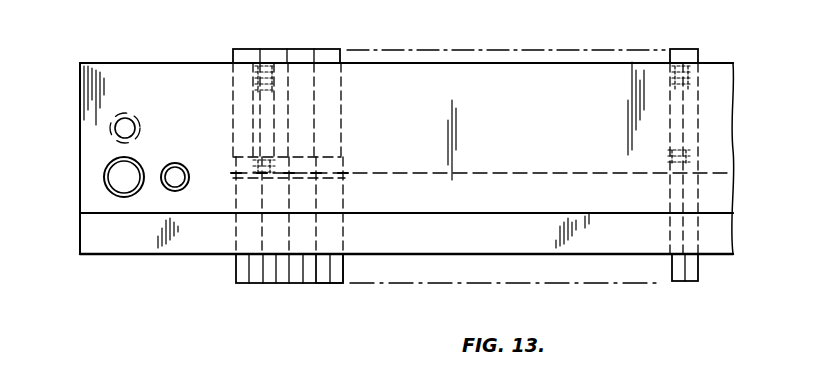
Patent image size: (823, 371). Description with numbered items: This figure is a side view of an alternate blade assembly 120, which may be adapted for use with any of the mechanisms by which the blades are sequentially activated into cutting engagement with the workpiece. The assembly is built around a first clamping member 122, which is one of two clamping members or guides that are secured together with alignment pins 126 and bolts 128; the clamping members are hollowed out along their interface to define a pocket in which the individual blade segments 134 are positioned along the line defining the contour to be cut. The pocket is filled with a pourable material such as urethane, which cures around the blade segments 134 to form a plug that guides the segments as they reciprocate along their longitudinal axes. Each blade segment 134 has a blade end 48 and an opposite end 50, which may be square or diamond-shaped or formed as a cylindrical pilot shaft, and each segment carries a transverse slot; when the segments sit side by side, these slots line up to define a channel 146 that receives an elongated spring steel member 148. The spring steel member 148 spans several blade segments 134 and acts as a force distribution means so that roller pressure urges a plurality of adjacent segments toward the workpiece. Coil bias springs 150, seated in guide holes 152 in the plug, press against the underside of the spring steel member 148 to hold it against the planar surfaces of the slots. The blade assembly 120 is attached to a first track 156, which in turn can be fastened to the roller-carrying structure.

The alternate blade assembly 120 is at (392, 298).
The first clamping member 122 is at (163, 68).
The alignment pins 126 is at (175, 172).
The bolts 128 is at (116, 178).
The blade segments 134 is at (292, 285).
The channel 146 is at (353, 162).
The spring steel member 148 is at (525, 172).
The coil bias springs 150 is at (256, 100).
The guide holes 152 is at (290, 68).
The first track 156 is at (108, 240).
The blade end 48 is at (332, 50).
The opposite end 50 is at (331, 285).